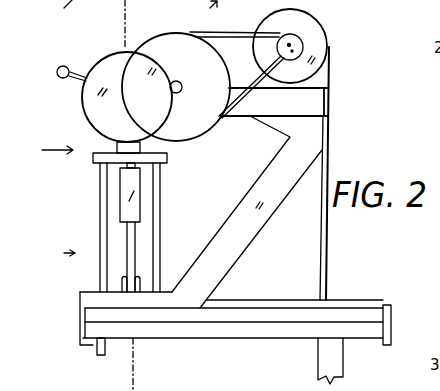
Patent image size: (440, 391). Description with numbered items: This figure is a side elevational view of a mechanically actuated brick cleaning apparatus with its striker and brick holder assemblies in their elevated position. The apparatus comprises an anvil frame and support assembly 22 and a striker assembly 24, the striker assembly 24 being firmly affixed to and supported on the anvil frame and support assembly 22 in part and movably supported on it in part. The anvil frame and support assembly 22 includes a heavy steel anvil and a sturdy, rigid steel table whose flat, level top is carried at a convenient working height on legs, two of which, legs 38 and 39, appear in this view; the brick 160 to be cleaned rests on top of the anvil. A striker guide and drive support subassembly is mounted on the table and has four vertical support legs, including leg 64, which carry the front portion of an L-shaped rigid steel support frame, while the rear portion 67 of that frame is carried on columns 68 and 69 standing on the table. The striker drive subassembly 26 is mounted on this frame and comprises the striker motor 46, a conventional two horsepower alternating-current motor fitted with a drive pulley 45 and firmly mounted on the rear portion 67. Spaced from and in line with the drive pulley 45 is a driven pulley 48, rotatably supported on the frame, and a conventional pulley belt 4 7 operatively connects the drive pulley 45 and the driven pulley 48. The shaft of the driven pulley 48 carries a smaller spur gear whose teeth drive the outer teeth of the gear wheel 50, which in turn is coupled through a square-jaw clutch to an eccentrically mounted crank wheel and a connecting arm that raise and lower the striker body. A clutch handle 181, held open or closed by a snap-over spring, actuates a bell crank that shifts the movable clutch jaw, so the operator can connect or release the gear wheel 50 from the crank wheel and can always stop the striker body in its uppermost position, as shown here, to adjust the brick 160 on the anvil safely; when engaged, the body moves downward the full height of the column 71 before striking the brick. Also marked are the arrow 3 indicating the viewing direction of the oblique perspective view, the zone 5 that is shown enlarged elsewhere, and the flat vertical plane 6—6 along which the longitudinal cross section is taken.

The arrow 3 is at (57, 142).
The belt upper run 4 is at (217, 35).
The zone 5 is at (63, 130).
The vertical plane 6 is at (118, 37).
The belt lower run 7 is at (237, 28).
The anvil frame and support assembly 22 is at (95, 187).
The striker assembly 24 is at (147, 185).
The striker drive subassembly 26 is at (201, 10).
The leg 38 is at (96, 348).
The leg 39 is at (344, 375).
The drive pulley 45 is at (301, 44).
The striker motor 46 is at (328, 48).
The driven pulley 48 is at (217, 74).
The gear wheel 50 is at (85, 110).
The vertical support leg 64 is at (160, 286).
The rear portion 67 is at (336, 104).
The column 68 is at (327, 249).
The column 69 is at (259, 231).
The column 71 is at (128, 238).
The brick 160 is at (122, 284).
The clutch handle 181 is at (71, 68).